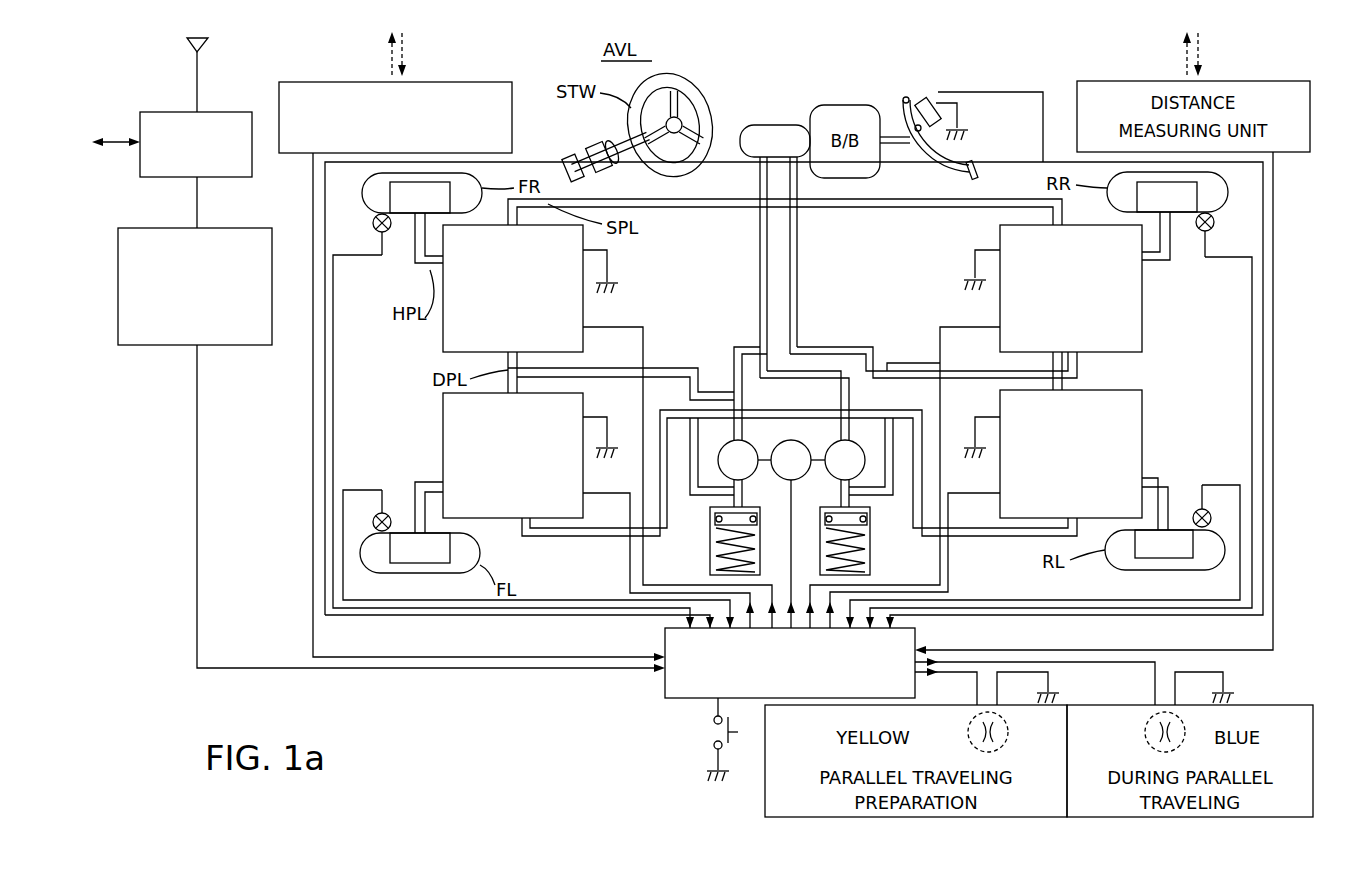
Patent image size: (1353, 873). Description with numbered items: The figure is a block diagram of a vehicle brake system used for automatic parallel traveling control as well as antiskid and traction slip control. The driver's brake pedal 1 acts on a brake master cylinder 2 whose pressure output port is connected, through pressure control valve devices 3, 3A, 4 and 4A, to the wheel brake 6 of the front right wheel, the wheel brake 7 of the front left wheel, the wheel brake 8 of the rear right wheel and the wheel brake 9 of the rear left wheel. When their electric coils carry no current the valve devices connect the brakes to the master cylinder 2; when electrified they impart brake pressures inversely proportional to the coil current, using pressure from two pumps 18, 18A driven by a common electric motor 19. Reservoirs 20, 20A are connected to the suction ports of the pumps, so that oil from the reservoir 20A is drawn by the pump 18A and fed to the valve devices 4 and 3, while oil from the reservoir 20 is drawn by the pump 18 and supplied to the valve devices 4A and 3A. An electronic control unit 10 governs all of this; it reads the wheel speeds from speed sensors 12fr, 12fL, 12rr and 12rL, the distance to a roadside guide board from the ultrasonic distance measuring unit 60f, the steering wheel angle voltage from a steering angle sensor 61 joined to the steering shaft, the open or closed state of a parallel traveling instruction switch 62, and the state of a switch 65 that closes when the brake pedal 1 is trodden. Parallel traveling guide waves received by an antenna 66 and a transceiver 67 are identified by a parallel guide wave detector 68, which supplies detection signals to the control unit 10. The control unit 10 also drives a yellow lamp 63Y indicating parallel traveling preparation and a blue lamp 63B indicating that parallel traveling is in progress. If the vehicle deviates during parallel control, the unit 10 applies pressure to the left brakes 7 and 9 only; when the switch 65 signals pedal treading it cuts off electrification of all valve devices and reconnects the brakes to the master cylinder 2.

The brake pedal 1 is at (978, 172).
The brake master cylinder 2 is at (745, 157).
The pressure control valve device 3 is at (443, 345).
The pressure control valve device 3A is at (443, 424).
The pressure control valve device 4 is at (1142, 318).
The pressure control valve device 4A is at (1142, 405).
The wheel brake 6 is at (374, 192).
The wheel brake 7 is at (412, 573).
The wheel brake 8 is at (1126, 195).
The wheel brake 9 is at (1128, 558).
The electronic control unit 10 is at (915, 633).
The speed sensor 12fr is at (386, 233).
The speed sensor 12fL is at (382, 512).
The speed sensor 12rr is at (1203, 232).
The speed sensor 12rL is at (1200, 509).
The pump 18 is at (720, 452).
The pump 18A is at (832, 476).
The electric motor 19 is at (784, 480).
The reservoir 20 is at (710, 557).
The reservoir 20A is at (870, 548).
The distance measuring unit 60f is at (350, 82).
The steering angle sensor 61 is at (590, 148).
The parallel traveling instruction switch 62 is at (712, 740).
The yellow lamp 63Y is at (975, 722).
The blue lamp 63B is at (1150, 722).
The switch 65 is at (922, 100).
The antenna 66 is at (190, 48).
The transceiver 67 is at (222, 112).
The parallel guide wave detector 68 is at (130, 228).